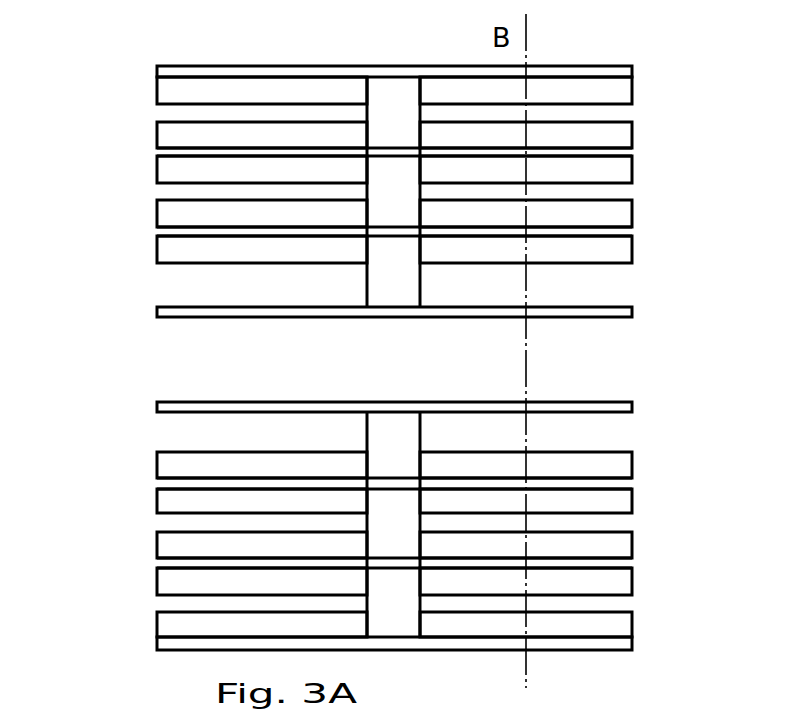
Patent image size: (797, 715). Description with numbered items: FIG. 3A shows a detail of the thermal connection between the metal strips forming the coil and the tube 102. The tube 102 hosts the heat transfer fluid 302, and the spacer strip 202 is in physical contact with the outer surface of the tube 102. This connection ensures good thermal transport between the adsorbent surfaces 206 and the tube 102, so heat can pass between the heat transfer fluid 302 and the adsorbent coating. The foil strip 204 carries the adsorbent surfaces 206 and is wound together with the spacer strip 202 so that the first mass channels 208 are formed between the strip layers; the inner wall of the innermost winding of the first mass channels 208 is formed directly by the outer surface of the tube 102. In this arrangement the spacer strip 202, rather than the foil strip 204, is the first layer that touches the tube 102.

The tube 102 is at (636, 306).
The spacer strip 202 is at (416, 120).
The foil strip 204 is at (633, 71).
The adsorbent surfaces 206 is at (157, 85).
The first mass channels 208 is at (168, 112).
The heat transfer fluid 302 is at (173, 355).